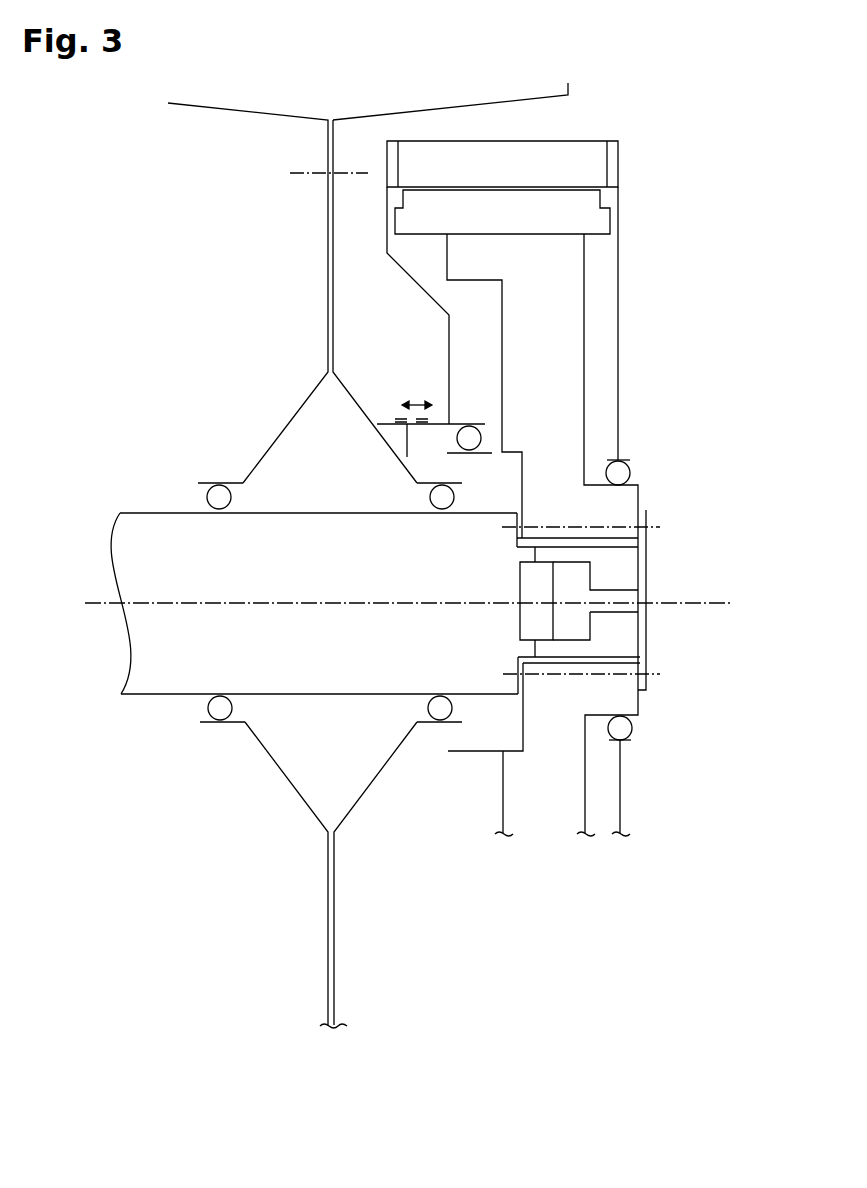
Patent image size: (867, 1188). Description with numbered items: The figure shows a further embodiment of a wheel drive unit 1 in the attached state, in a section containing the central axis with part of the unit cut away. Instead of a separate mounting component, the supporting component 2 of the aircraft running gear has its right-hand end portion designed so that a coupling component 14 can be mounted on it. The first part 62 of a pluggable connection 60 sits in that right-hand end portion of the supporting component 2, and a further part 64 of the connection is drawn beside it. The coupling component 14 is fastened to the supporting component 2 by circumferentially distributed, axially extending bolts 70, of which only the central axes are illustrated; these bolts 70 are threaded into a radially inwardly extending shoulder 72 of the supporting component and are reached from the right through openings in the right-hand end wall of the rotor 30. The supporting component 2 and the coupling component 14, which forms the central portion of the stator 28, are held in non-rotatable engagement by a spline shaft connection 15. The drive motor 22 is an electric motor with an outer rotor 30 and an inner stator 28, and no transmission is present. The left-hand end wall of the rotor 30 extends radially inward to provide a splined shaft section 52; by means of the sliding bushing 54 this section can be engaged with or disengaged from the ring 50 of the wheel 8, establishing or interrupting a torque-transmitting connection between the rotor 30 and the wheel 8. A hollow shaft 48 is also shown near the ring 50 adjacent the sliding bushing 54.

The wheel drive unit 1 is at (607, 133).
The supporting component 2 is at (168, 678).
The wheel 8 is at (326, 289).
The coupling component 14 is at (633, 501).
The spline shaft connection 15 is at (597, 543).
The drive motor 22 is at (622, 358).
The stator 28 is at (590, 215).
The rotor 30 is at (590, 155).
The hollow shaft 48 is at (460, 424).
The ring 50 is at (402, 432).
The splined shaft section 52 is at (425, 427).
The sliding bushing 54 is at (394, 412).
The pluggable connection 60 is at (553, 643).
The first part of pluggable connection 62 is at (535, 622).
The coupling half 64 is at (568, 622).
The bolts 70 is at (606, 527).
The shoulder 72 is at (515, 660).